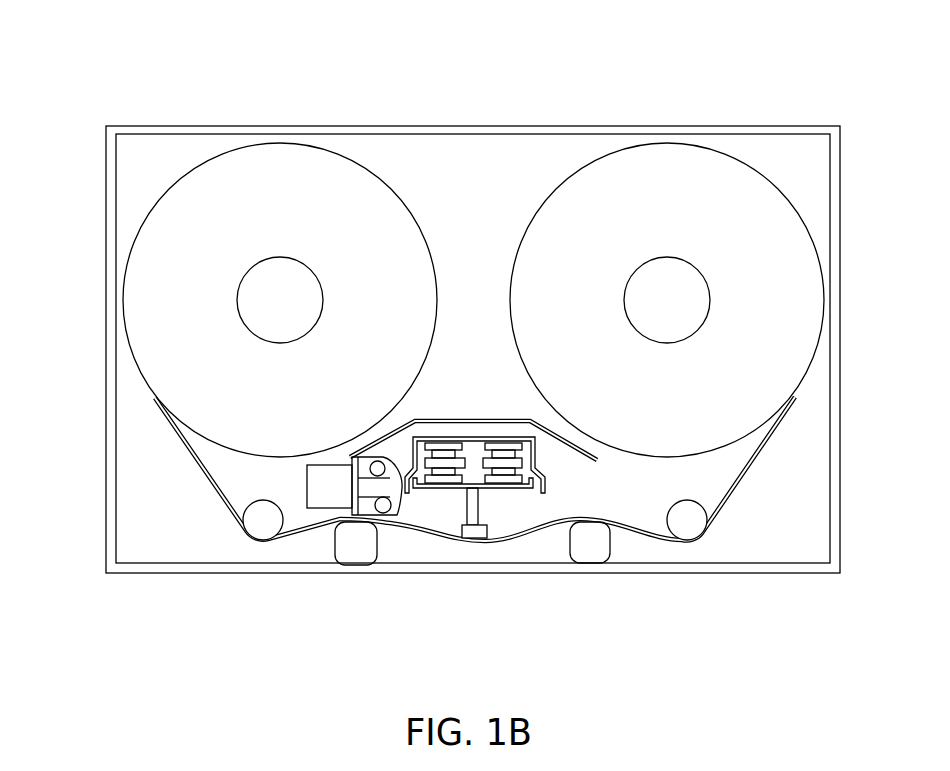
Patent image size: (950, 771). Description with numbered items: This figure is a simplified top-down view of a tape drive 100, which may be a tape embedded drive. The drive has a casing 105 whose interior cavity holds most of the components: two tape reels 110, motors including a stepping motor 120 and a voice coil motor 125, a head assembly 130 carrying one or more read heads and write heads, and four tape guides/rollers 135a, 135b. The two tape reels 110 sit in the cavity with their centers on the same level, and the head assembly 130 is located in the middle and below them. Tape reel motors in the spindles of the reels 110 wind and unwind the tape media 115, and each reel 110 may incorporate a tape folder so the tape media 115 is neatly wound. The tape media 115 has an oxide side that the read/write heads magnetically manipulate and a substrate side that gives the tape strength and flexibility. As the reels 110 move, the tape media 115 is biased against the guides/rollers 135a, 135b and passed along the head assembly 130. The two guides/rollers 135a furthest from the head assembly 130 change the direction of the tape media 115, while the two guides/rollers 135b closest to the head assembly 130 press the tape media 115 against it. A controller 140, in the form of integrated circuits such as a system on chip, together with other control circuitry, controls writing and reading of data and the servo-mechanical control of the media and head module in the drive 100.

The tape drive 100 is at (104, 58).
The casing 105 is at (505, 125).
The tape reels 110 is at (265, 143).
The tape media 115 is at (209, 481).
The stepping motor 120 is at (318, 510).
The voice coil motor 125 is at (448, 488).
The head assembly 130 is at (473, 540).
The guides/rollers 135a is at (261, 521).
The guides/rollers 135b is at (357, 547).
The controller 140 is at (490, 536).